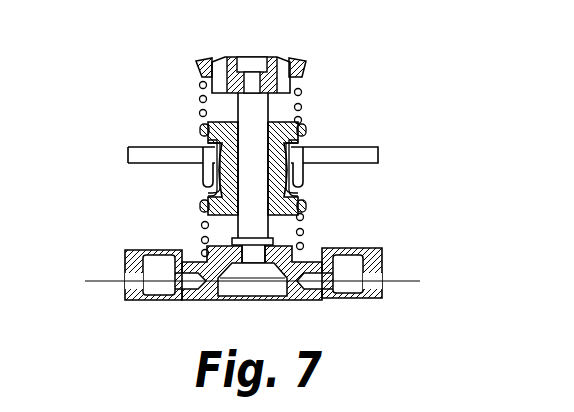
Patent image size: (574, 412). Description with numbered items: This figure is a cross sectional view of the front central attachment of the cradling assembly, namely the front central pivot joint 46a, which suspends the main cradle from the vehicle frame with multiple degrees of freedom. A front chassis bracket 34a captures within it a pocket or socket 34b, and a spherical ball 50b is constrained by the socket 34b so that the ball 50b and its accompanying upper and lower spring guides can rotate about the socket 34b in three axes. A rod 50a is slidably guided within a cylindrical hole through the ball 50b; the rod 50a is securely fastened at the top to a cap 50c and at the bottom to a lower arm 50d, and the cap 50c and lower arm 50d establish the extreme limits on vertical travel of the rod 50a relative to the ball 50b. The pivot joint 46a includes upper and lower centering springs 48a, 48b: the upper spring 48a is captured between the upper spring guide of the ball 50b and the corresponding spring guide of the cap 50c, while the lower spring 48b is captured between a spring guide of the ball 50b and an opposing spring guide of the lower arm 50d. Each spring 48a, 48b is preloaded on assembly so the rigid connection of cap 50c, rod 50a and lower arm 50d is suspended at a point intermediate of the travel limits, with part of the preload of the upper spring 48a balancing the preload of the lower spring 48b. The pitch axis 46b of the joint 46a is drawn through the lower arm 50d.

The front central pivot joint 46a is at (198, 70).
The cap 50c is at (291, 62).
The upper centering spring 48a is at (303, 91).
The spherical ball 50b is at (296, 141).
The front chassis bracket 34a is at (366, 152).
The socket 34b is at (303, 190).
The rod 50a is at (249, 185).
The lower centering spring 48b is at (305, 232).
The pitch axis 46b is at (100, 281).
The lower arm 50d is at (307, 297).